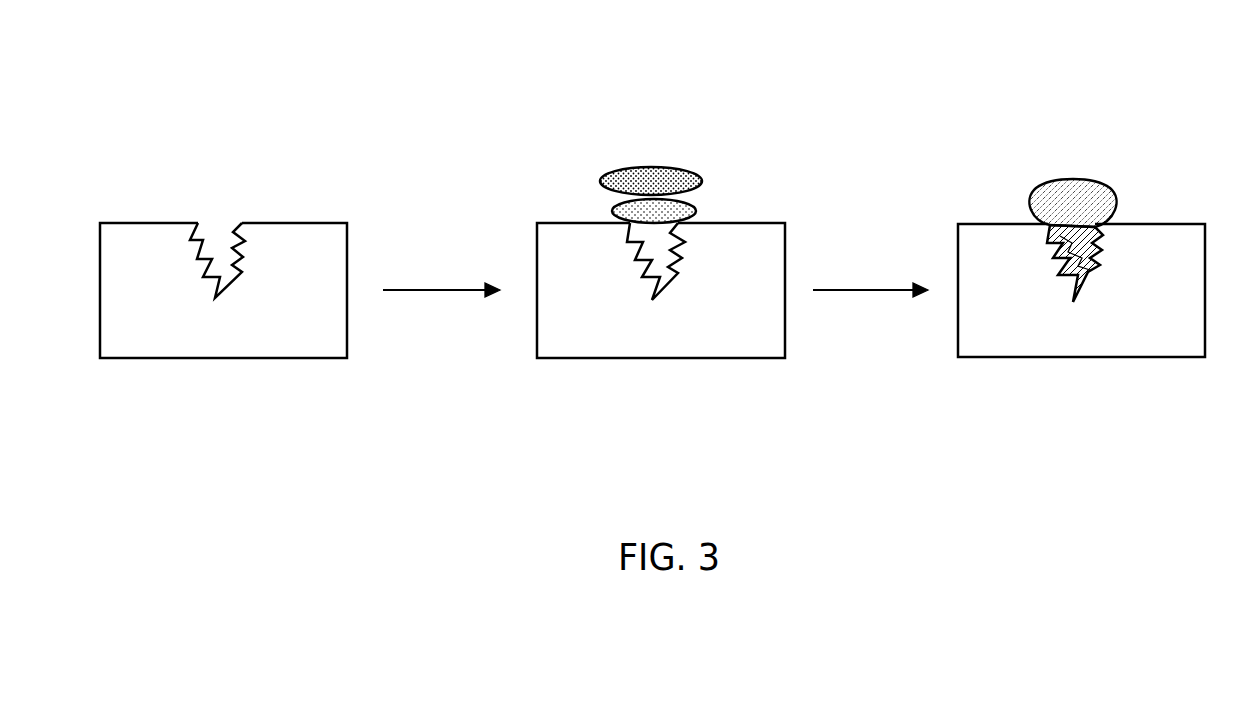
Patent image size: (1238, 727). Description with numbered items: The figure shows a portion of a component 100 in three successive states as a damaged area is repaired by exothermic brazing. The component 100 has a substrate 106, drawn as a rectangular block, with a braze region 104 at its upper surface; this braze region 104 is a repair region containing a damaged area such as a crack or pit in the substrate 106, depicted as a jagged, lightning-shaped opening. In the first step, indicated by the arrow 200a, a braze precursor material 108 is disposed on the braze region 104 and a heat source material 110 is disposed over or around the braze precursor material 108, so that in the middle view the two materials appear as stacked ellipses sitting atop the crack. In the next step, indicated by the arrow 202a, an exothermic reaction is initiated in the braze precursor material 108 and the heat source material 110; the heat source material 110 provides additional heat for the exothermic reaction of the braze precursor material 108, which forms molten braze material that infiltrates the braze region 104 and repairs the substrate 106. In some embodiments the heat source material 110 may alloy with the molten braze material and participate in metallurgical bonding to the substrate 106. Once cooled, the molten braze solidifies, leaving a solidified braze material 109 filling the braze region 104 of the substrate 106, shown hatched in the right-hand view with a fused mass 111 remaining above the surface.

The component 100 is at (300, 118).
The braze region 104 is at (222, 230).
The substrate 106 is at (348, 242).
The braze precursor material 108 is at (698, 213).
The heat source material 110 is at (642, 167).
The fused repair material 111 is at (1063, 183).
The solidified braze material 109 is at (1102, 262).
The step of disposing heat source material and braze precursor material 200a is at (443, 297).
The step of initiating exothermic reaction 202a is at (868, 295).